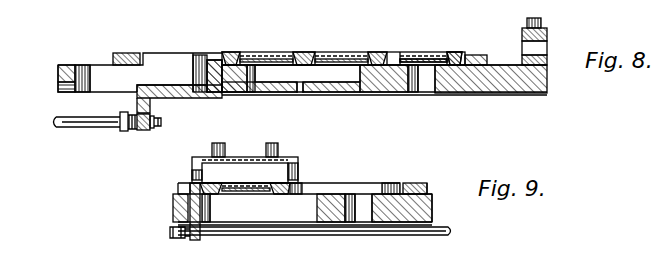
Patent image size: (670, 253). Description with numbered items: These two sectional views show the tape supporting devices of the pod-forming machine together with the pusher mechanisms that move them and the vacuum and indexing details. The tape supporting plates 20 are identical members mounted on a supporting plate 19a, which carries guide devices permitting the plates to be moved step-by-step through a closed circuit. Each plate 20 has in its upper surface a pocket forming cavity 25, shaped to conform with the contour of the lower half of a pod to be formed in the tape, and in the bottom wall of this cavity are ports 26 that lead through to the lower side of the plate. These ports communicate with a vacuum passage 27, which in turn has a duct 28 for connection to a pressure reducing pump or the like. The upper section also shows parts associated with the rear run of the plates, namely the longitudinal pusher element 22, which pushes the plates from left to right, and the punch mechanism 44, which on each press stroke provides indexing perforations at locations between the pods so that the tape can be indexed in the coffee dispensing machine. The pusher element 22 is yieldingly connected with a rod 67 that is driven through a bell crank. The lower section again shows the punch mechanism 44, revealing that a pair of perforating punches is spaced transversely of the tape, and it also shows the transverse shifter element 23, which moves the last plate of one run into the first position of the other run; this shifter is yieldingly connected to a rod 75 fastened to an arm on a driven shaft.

In FIG. 8, the supporting plate 19a is at (548, 85).
In FIG. 9, the supporting plate 19a is at (433, 205).
In FIG. 8, the pusher element 22 is at (202, 70).
In FIG. 8, the tape supporting plate 20 is at (385, 48).
In FIG. 9, the tape supporting plate 20 is at (217, 173).
In FIG. 8, the pocket forming cavity 25 is at (404, 56).
In FIG. 8, the ports 26 is at (424, 54).
In FIG. 8, the punch mechanism 44 is at (542, 22).
In FIG. 9, the punch mechanism 44 is at (270, 150).
In FIG. 8, the duct 28 is at (301, 94).
In FIG. 8, the vacuum passage 27 is at (332, 74).
In FIG. 8, the rod 67 is at (70, 128).
In FIG. 9, the transverse shifter element 23 is at (190, 203).
In FIG. 9, the rod 75 is at (443, 234).